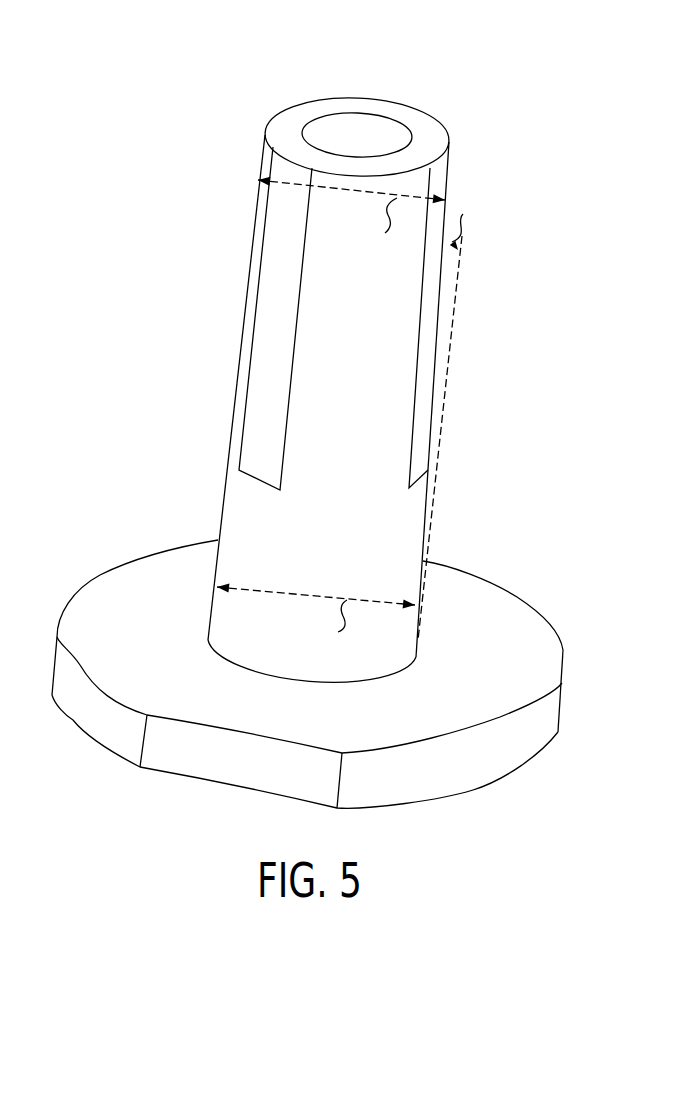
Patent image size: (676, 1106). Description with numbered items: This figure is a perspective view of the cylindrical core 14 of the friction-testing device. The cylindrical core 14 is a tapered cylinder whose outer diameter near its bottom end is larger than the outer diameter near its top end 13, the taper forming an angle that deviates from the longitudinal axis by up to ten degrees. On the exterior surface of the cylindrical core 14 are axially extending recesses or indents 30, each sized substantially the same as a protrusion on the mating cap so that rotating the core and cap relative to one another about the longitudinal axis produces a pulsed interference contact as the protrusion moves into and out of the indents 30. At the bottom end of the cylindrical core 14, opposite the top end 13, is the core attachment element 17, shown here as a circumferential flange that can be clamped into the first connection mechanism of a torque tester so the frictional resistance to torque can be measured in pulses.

The cylindrical core 14 is at (170, 78).
The top end 13 is at (298, 116).
The indent 30 is at (268, 268).
The core attachment element 17 is at (108, 588).